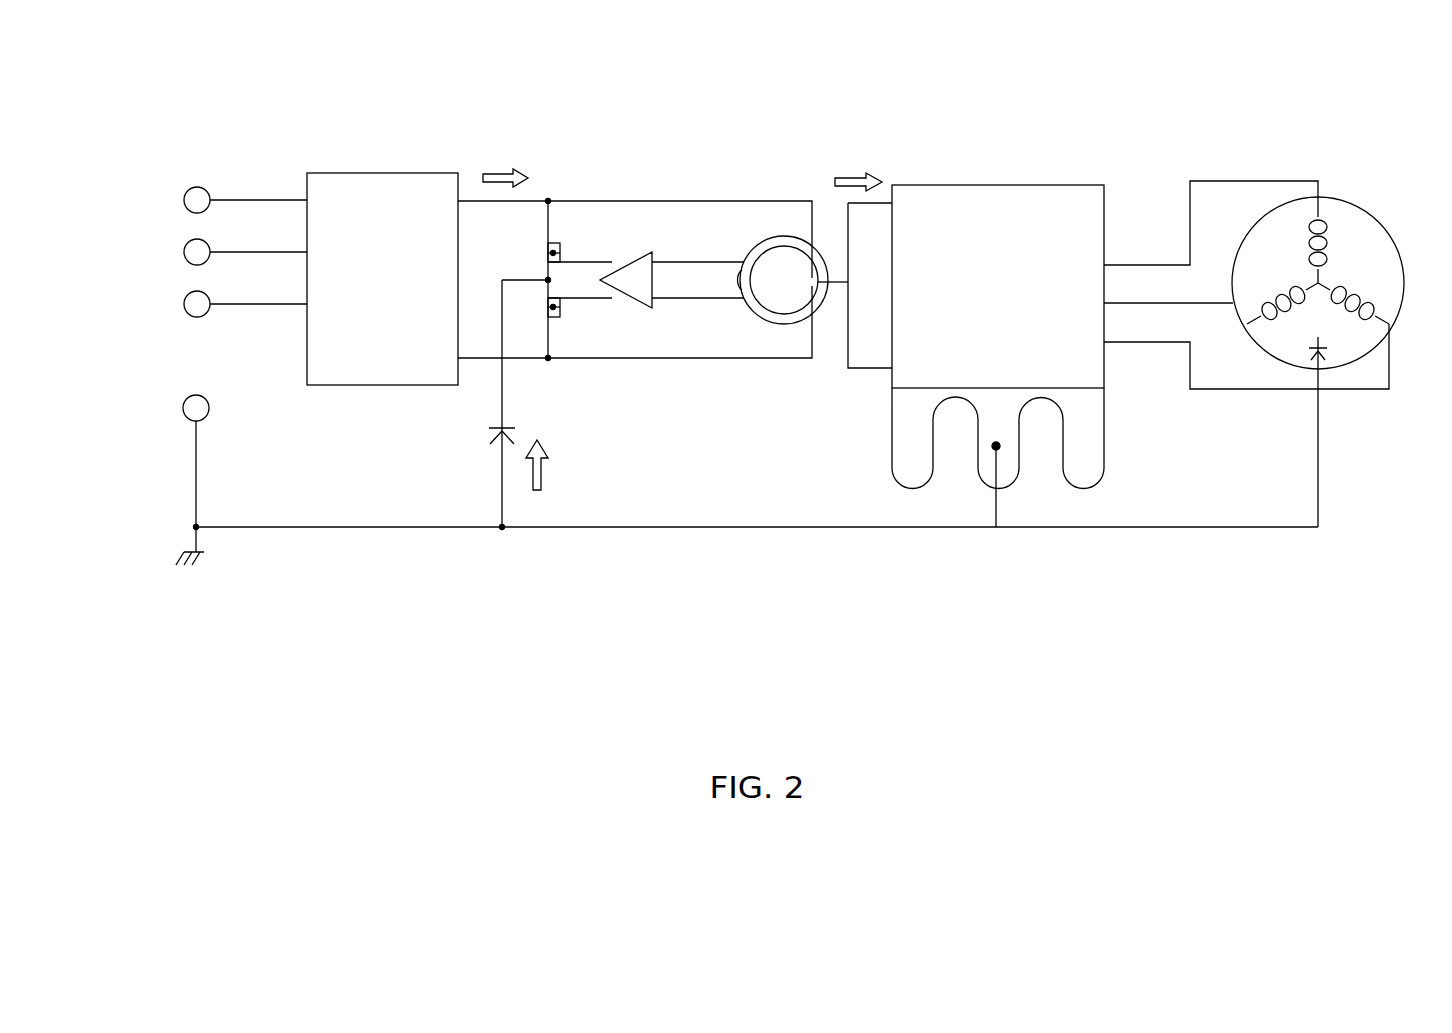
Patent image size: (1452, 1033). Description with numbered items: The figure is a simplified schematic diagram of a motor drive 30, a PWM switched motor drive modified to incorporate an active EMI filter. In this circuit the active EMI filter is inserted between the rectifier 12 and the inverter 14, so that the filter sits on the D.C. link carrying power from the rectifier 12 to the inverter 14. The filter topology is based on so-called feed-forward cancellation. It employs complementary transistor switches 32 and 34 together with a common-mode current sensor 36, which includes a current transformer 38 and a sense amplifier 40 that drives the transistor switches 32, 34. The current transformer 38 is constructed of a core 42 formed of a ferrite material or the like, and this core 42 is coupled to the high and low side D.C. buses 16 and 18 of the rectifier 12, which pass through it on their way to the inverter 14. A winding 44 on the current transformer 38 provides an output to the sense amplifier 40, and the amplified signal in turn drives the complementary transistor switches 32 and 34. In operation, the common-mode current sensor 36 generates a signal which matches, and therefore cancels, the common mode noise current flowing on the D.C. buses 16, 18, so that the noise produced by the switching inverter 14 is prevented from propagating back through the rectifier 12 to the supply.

The motor drive 30 is at (699, 48).
The rectifier 12 is at (333, 172).
The inverter 14 is at (970, 184).
The high side D.C. bus 16 is at (733, 202).
The low side D.C. bus 18 is at (812, 322).
The complementary transistor switch 32 is at (560, 244).
The complementary transistor switch 34 is at (560, 317).
The common-mode current sensor 36 is at (627, 192).
The current transformer 38 is at (759, 240).
The sense amplifier 40 is at (668, 299).
The core 42 is at (783, 323).
The winding 44 is at (745, 320).